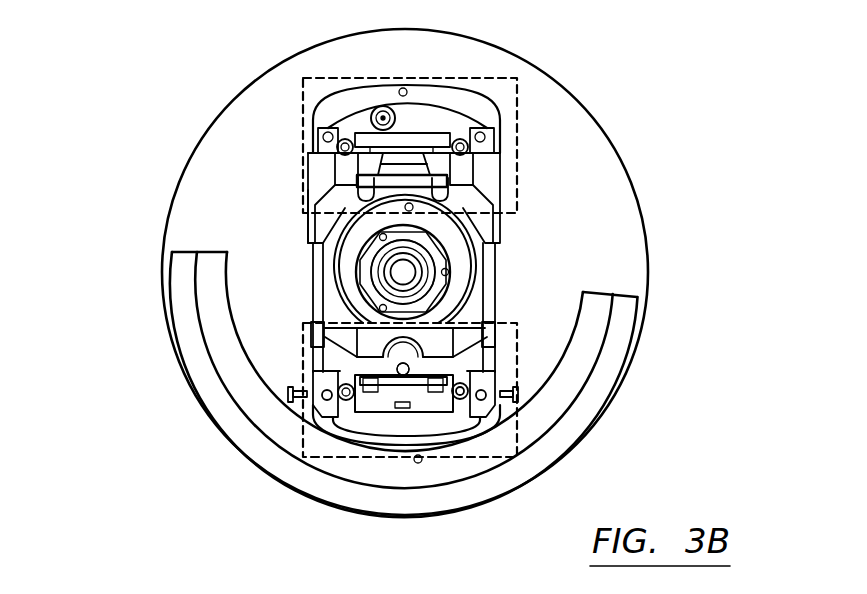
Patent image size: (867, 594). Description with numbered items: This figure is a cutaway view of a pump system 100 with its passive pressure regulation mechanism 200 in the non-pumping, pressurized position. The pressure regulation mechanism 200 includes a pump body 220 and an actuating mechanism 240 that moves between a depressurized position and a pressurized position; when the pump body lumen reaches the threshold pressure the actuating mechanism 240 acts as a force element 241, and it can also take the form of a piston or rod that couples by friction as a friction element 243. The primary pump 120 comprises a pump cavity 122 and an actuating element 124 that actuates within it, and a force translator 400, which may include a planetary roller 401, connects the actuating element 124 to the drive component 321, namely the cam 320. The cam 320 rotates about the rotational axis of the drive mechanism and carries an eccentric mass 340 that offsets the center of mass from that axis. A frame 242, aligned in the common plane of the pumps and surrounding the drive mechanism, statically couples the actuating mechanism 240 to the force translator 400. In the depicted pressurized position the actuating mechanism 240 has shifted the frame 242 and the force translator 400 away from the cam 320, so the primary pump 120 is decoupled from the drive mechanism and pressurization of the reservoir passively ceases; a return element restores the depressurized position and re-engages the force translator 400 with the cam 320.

The pump system 100 is at (99, 72).
The passive pressure regulation mechanism 200 is at (488, 78).
The pump body 220 is at (363, 132).
The actuating mechanism 240 is at (333, 188).
The force element 241 is at (306, 151).
The friction element 243 is at (333, 203).
The frame 242 is at (313, 263).
The cam 320 is at (468, 253).
The drive component 321 is at (566, 234).
The force translator 400 is at (413, 360).
The planetary roller 401 is at (578, 343).
The eccentric mass 340 is at (604, 366).
The primary pump 120 is at (380, 402).
The pump cavity 122 is at (348, 398).
The actuating element 124 is at (410, 377).